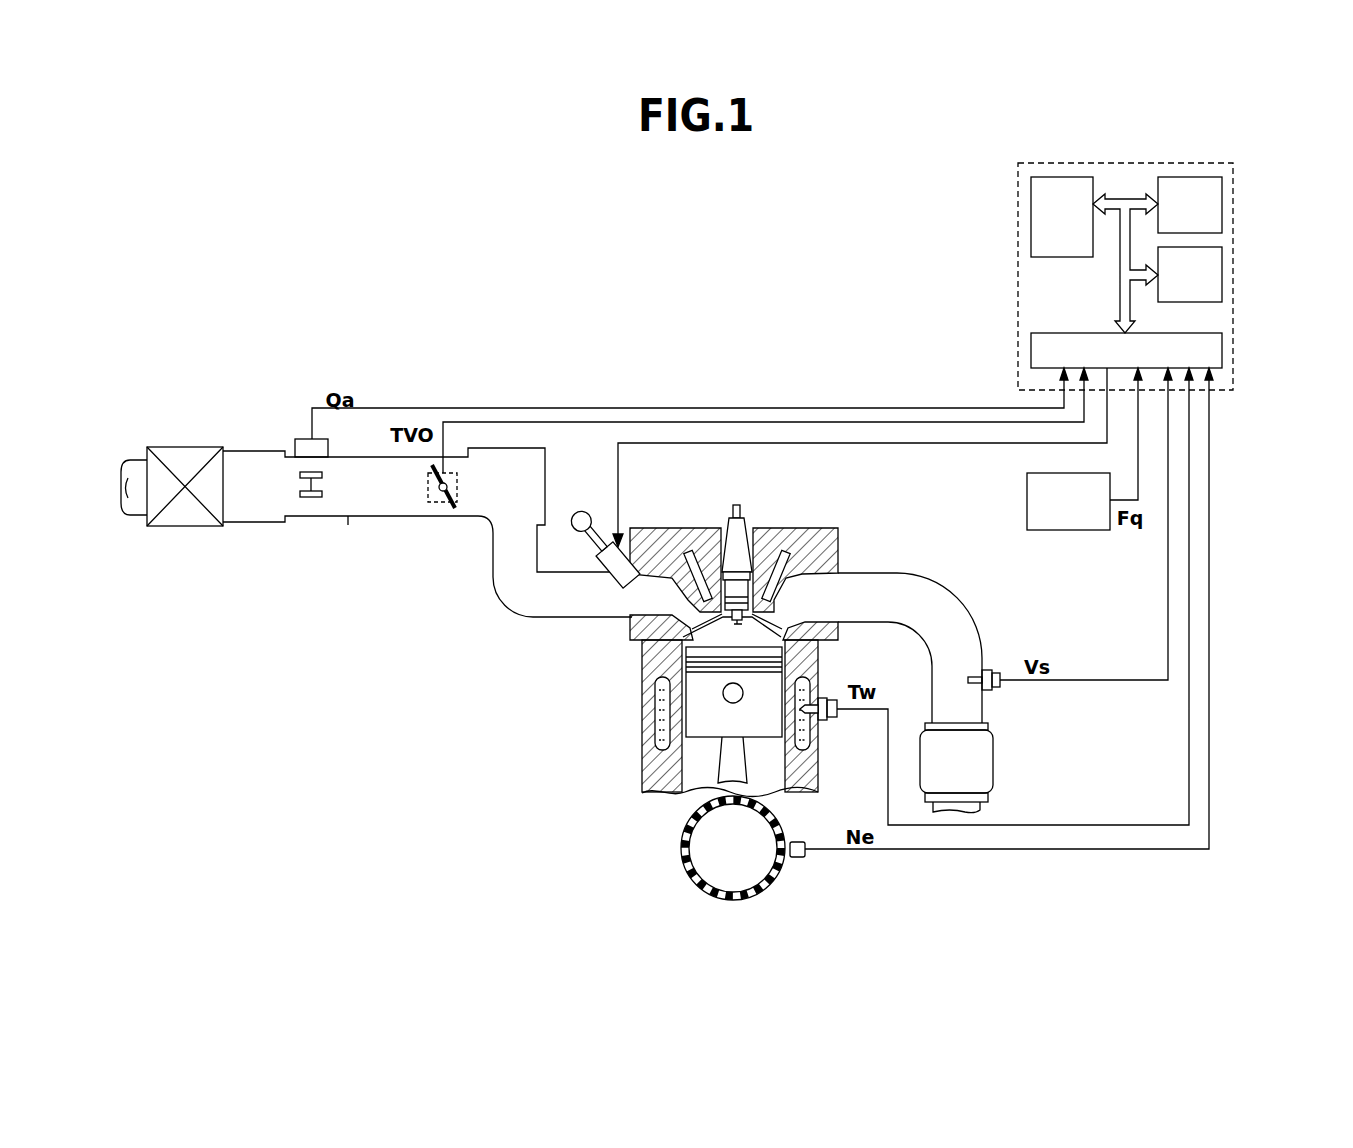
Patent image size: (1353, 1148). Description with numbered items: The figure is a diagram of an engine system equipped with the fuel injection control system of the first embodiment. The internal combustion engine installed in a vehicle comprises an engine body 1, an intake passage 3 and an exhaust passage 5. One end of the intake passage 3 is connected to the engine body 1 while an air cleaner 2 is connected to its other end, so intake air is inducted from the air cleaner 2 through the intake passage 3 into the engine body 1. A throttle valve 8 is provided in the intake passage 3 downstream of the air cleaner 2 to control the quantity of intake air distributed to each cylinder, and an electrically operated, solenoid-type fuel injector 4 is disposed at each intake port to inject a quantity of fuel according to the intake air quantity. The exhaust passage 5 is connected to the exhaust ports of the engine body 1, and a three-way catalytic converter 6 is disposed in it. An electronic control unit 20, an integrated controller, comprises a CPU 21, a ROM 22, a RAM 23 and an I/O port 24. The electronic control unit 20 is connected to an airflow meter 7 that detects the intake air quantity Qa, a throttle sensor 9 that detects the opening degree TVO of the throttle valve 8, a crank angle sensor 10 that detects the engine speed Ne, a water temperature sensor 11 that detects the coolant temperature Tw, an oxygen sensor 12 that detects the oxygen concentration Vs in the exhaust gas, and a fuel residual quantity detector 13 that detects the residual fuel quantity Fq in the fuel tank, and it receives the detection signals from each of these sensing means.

The engine body 1 is at (641, 745).
The air cleaner 2 is at (188, 527).
The intake passage 3 is at (576, 618).
The fuel injector 4 is at (612, 548).
The exhaust passage 5 is at (907, 573).
The three-way catalytic converter 6 is at (995, 762).
The airflow meter 7 is at (295, 440).
The throttle valve 8 is at (433, 467).
The throttle sensor 9 is at (458, 488).
The crank angle sensor 10 is at (805, 842).
The water temperature sensor 11 is at (822, 722).
The oxygen sensor 12 is at (1002, 690).
The fuel residual quantity detector 13 is at (1027, 500).
The electronic control unit 20 is at (1119, 276).
The CPU 21 is at (1050, 258).
The ROM 22 is at (1222, 203).
The RAM 23 is at (1222, 275).
The I/O port 24 is at (1092, 333).